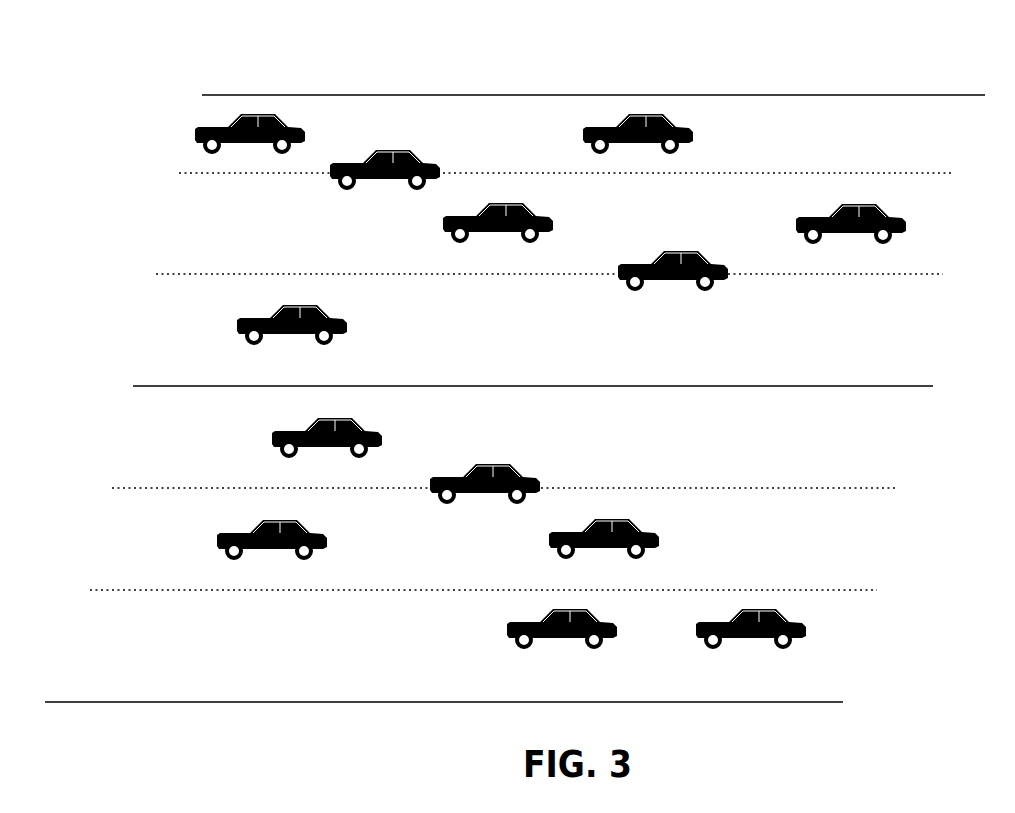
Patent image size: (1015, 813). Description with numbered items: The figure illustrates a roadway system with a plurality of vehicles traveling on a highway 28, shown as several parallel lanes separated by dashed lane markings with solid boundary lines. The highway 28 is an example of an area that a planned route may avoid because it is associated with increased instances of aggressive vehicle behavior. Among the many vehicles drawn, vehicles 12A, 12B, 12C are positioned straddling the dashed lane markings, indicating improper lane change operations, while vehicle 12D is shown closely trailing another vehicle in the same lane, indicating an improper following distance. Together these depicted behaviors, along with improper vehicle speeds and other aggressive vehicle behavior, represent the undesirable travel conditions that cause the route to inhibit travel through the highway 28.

The vehicle 12A is at (341, 176).
The vehicle 12B is at (632, 274).
The vehicle 12C is at (444, 487).
The vehicle 12D is at (520, 633).
The highway 28 is at (860, 117).